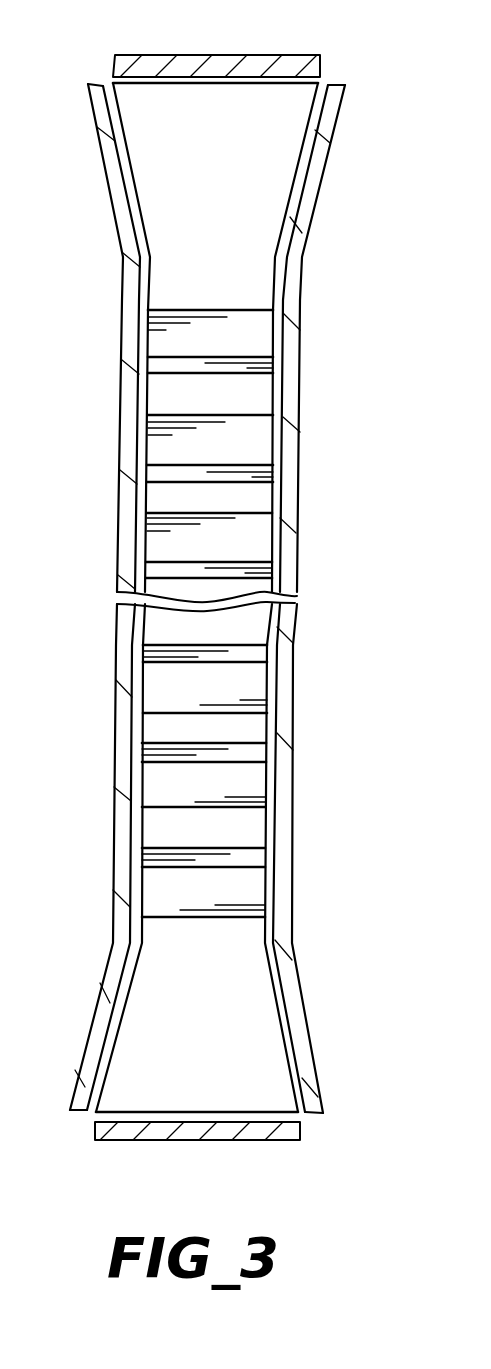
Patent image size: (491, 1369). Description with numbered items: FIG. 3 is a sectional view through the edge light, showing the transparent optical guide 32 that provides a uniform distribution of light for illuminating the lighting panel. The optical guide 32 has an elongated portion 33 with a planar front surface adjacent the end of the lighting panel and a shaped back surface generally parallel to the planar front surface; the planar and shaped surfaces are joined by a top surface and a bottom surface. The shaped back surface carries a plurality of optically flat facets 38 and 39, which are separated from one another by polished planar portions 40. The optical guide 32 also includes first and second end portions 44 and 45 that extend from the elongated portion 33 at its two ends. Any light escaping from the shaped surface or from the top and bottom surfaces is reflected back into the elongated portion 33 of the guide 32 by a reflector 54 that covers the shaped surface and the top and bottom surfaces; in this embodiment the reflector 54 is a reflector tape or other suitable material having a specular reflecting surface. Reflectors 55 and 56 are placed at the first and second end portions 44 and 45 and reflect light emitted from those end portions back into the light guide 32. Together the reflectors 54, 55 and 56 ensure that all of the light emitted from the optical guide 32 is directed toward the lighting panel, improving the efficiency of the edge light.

The optical guide 32 is at (143, 550).
The elongated portion 33 is at (155, 625).
The optically flat facet 38 is at (253, 333).
The optically flat facet 39 is at (237, 365).
The polished planar portion 40 is at (253, 497).
The first end portion 44 is at (220, 1068).
The second end portion 45 is at (253, 125).
The reflector 54 is at (98, 1012).
The reflector 55 is at (170, 1143).
The reflector 56 is at (180, 62).